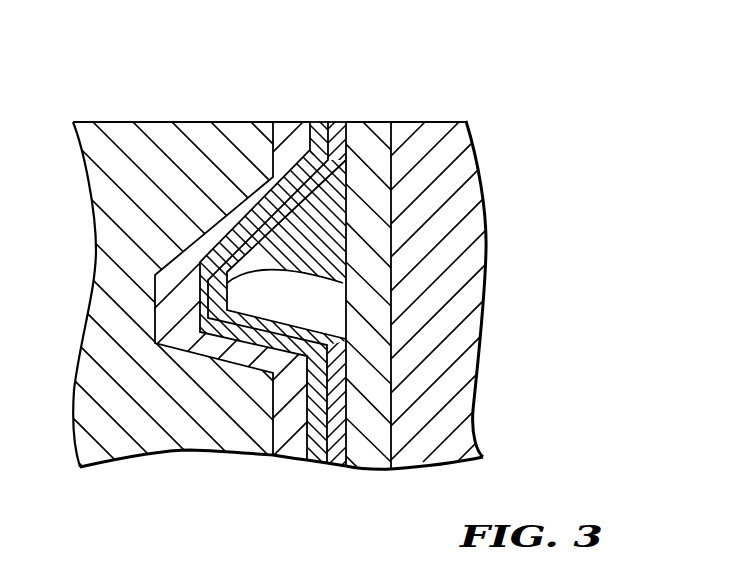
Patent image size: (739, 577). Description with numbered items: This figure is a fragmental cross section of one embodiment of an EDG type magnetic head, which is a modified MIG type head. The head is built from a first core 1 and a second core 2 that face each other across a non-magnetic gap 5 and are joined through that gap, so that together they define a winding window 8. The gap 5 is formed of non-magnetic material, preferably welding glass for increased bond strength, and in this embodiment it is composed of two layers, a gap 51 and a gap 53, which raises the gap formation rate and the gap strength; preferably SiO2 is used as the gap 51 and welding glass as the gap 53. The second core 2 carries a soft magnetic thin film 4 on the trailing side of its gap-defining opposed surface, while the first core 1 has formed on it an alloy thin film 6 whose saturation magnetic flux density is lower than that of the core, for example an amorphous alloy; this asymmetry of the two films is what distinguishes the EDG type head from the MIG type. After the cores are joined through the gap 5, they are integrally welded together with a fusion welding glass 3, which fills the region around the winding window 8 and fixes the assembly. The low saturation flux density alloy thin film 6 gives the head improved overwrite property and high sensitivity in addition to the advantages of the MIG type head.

The first core 1 is at (102, 342).
The second core 2 is at (465, 171).
The fusion welding glass 3 is at (337, 271).
The soft magnetic thin film 4 is at (386, 122).
The gap 5 is at (377, 46).
The gap (first gap layer) 51 is at (320, 121).
The gap (second gap layer) 53 is at (343, 122).
The alloy thin film 6 is at (300, 124).
The winding window 8 is at (315, 320).